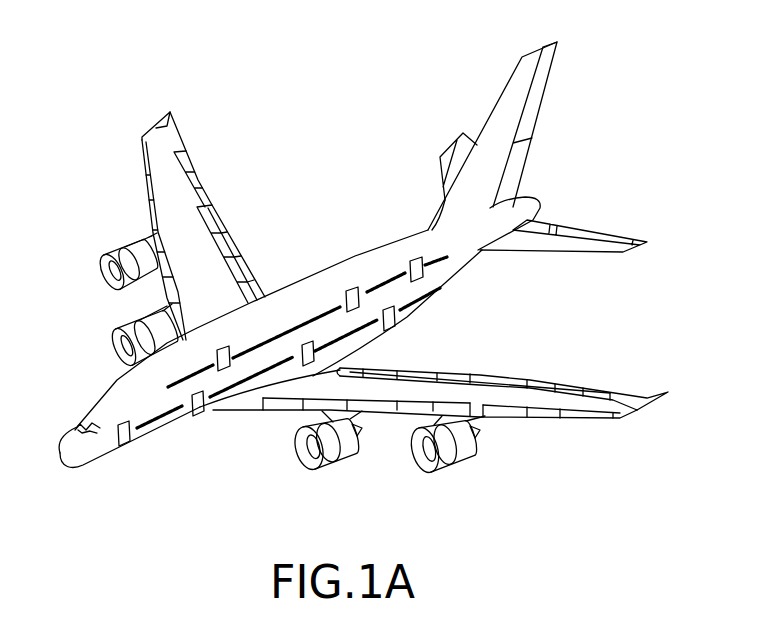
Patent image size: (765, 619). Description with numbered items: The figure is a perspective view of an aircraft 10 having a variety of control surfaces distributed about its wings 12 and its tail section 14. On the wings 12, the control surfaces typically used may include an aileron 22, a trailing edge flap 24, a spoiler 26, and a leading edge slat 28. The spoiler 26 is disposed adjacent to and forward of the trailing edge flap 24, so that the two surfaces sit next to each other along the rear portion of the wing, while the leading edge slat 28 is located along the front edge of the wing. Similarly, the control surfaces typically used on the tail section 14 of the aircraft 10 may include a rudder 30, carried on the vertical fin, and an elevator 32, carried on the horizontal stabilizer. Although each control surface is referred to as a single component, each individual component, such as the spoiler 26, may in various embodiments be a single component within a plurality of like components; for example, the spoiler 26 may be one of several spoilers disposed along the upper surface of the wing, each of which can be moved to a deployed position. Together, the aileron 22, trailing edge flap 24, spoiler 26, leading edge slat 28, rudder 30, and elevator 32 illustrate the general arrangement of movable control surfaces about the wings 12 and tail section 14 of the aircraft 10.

The aircraft 10 is at (78, 148).
The wings 12 is at (362, 265).
The tail section 14 is at (543, 130).
The aileron 22 is at (184, 160).
The trailing edge flap 24 is at (245, 265).
The spoiler 26 is at (220, 244).
The leading edge slat 28 is at (152, 213).
The rudder 30 is at (532, 103).
The elevator 32 is at (588, 232).